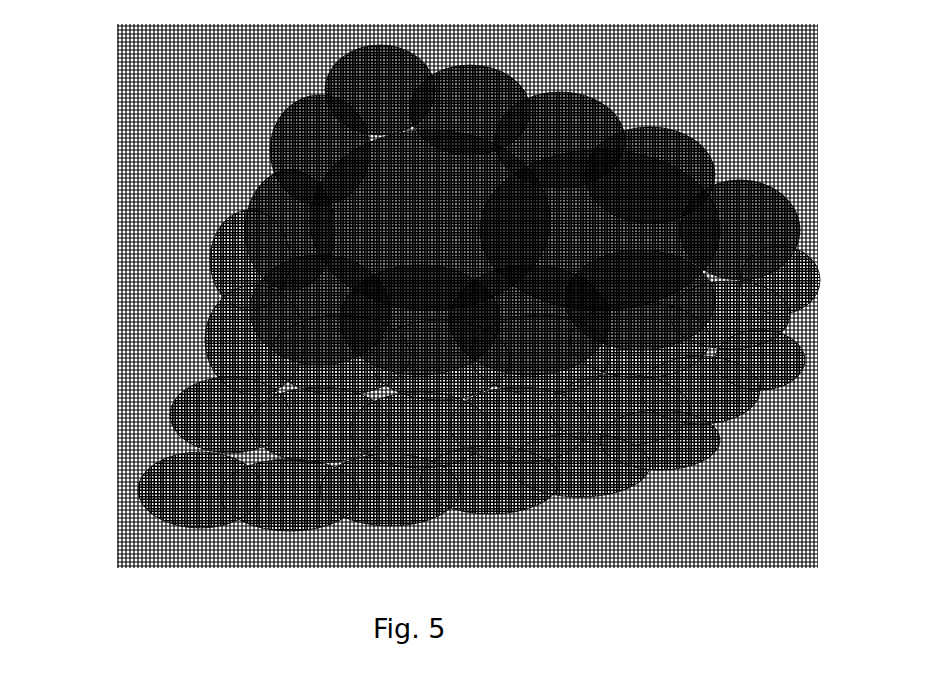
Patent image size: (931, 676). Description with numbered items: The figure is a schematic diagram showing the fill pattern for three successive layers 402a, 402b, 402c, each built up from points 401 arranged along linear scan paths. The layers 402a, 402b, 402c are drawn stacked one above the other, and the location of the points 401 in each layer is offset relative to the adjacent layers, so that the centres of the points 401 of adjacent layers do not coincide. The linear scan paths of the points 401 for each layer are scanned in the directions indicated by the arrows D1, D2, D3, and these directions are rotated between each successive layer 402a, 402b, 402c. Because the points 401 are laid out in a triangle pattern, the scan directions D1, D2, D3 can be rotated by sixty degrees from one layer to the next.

The points 401 is at (662, 172).
The first layer 402a is at (141, 492).
The second layer 402b is at (193, 410).
The third layer 402c is at (228, 339).
The scan direction arrow D1 is at (165, 335).
The scan direction arrow D2 is at (448, 388).
The scan direction arrow D3 is at (577, 100).